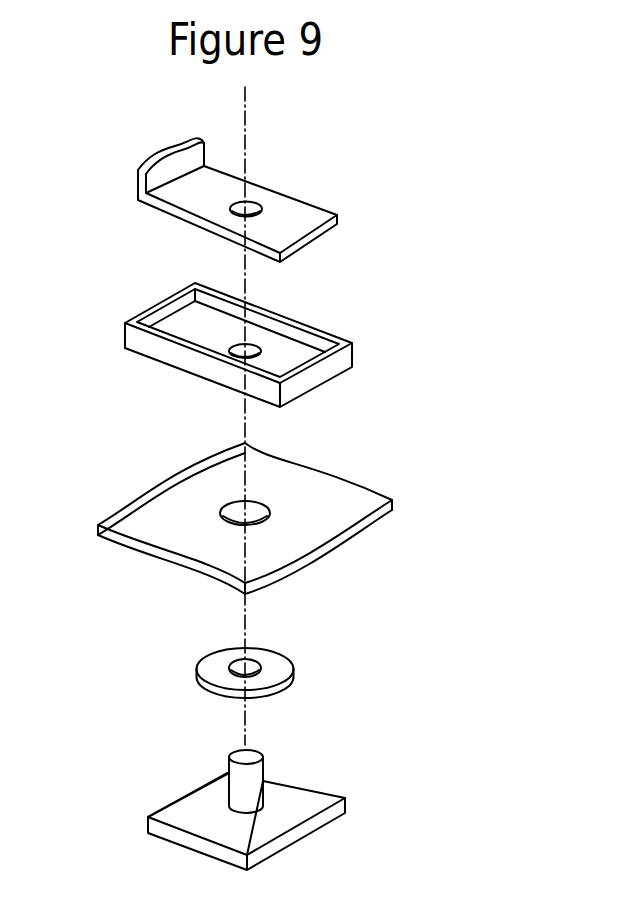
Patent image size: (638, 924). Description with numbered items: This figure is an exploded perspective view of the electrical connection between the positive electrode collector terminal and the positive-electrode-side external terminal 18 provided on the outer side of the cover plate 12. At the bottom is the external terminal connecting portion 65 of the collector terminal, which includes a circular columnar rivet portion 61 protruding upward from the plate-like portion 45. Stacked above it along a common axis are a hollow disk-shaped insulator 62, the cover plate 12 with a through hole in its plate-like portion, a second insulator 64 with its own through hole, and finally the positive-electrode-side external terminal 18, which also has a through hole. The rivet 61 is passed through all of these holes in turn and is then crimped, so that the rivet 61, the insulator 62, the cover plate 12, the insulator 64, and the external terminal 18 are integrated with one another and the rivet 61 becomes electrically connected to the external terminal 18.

The positive-electrode-side external terminal 18 is at (307, 213).
The insulator 64 is at (343, 360).
The cover plate 12 is at (353, 492).
The insulator 62 is at (281, 667).
The rivet portion 61 is at (250, 783).
The plate-like portion 45 is at (307, 798).
The external terminal connecting portion 65 is at (217, 828).